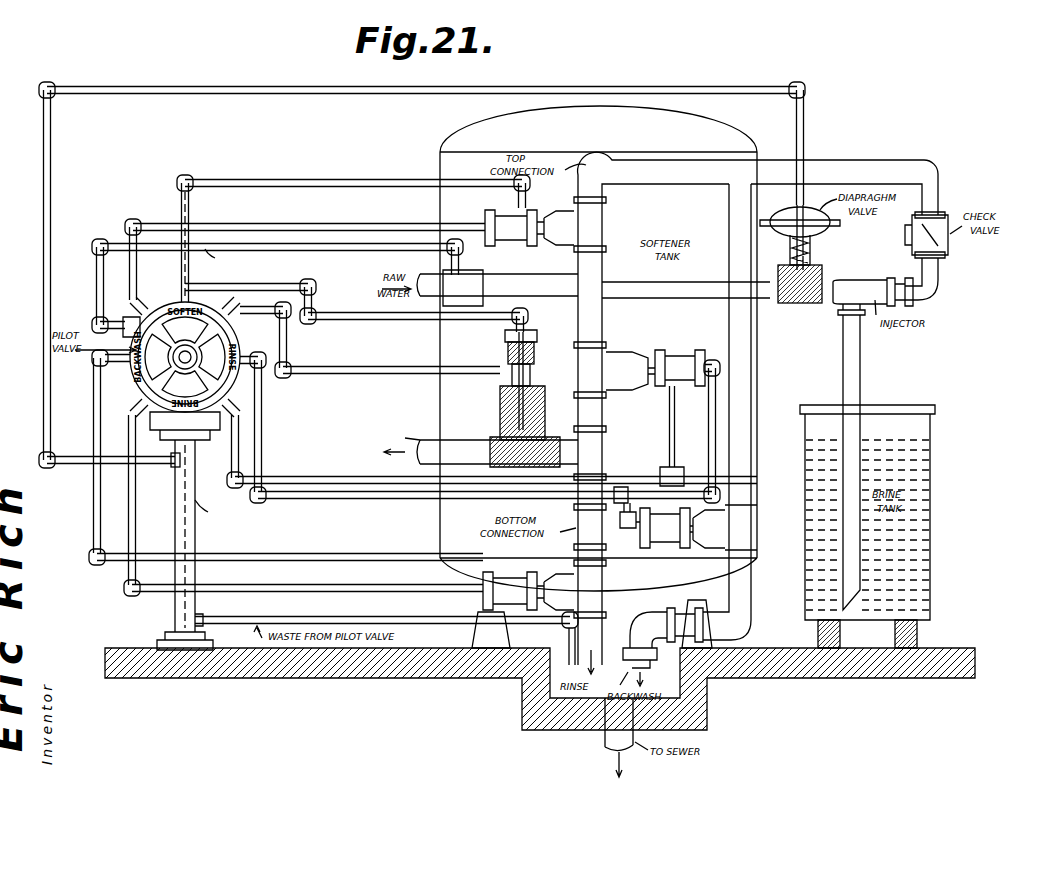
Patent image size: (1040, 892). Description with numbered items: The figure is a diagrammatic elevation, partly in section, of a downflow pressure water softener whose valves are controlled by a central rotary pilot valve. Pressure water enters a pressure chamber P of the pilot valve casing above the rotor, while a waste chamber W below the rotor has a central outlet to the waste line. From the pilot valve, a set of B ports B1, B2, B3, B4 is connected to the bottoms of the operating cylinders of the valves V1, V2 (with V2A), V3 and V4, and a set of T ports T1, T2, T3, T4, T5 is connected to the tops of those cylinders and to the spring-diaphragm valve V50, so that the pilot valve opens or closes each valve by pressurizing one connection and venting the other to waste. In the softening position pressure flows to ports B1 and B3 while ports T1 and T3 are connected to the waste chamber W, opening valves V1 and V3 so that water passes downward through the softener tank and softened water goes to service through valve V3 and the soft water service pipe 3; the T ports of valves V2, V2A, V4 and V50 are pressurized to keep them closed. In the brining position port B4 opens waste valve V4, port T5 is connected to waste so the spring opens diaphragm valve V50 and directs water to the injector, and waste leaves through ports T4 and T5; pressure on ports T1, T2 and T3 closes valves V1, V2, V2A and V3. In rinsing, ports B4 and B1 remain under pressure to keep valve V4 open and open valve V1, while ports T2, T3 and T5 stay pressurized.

The T port T5 is at (220, 88).
The B port B1 is at (308, 183).
The T port T1 is at (251, 225).
The pressure chamber P is at (96, 291).
The B port B4 is at (93, 470).
The T port T4 is at (134, 509).
The T port T2 is at (261, 417).
The B port B2 is at (295, 474).
The T port T3 is at (362, 318).
The B port B3 is at (335, 372).
The service valve V3 is at (512, 418).
The soft water service pipe 3 is at (443, 447).
The waste chamber W is at (188, 496).
The inlet valve V1 is at (545, 228).
The backwash valve V2 is at (646, 370).
The backwash valve V2A is at (698, 527).
The waste valve V4 is at (543, 591).
The spring-diaphragm valve V50 is at (808, 282).